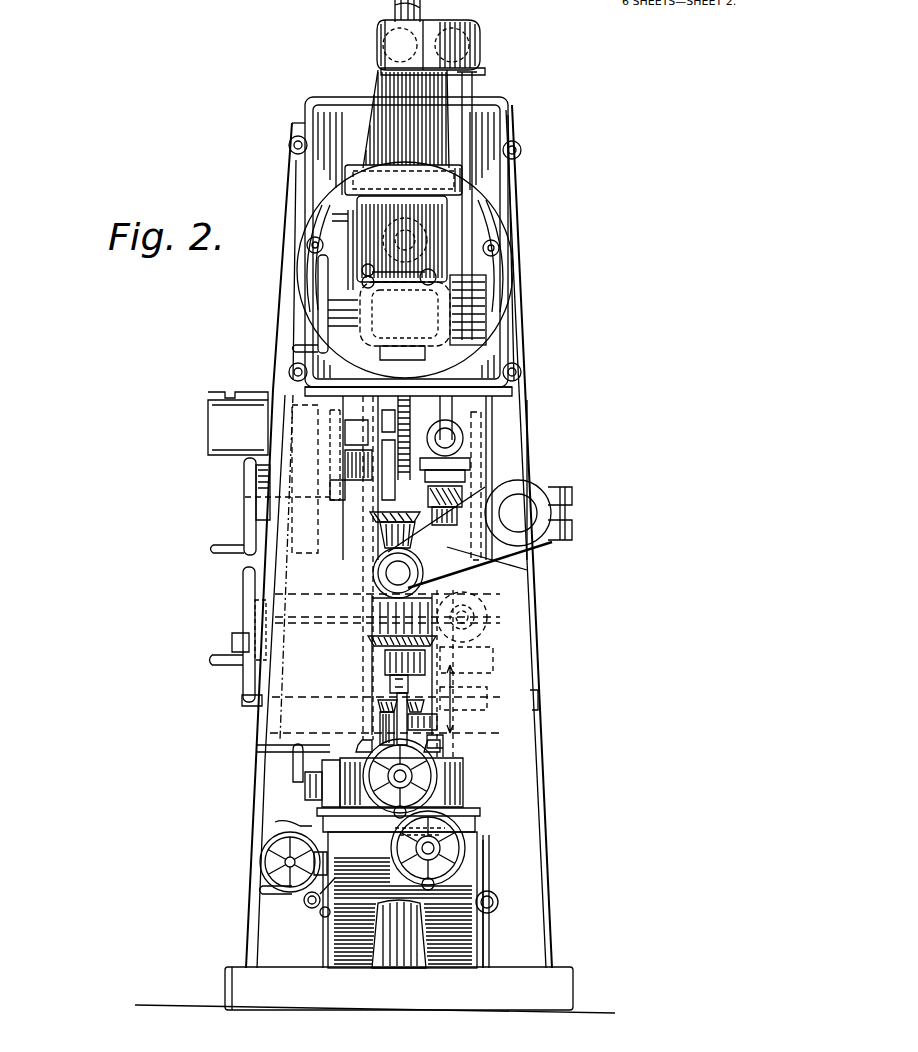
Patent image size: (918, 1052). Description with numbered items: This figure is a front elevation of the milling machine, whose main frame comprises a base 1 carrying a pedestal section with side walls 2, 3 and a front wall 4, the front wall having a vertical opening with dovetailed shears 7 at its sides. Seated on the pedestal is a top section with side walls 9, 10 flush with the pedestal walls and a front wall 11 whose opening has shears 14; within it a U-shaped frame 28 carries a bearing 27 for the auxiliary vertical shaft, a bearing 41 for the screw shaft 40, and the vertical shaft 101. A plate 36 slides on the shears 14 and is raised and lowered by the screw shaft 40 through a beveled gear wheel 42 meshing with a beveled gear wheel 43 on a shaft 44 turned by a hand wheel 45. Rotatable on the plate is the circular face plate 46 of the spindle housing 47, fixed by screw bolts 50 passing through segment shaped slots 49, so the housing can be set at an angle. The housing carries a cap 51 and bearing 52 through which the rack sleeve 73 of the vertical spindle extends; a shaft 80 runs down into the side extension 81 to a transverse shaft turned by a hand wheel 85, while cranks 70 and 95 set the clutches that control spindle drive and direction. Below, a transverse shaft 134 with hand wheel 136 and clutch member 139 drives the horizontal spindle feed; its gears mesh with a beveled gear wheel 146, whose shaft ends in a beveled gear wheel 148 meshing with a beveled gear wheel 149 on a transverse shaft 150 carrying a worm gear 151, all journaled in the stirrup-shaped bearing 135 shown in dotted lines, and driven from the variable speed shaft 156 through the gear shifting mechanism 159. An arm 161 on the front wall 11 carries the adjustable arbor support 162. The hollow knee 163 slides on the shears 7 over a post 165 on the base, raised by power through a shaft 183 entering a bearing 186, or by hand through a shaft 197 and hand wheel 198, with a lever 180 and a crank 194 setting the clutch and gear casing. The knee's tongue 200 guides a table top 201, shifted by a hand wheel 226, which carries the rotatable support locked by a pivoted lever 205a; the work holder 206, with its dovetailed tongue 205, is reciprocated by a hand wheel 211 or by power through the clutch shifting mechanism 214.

The base 1 is at (235, 980).
The side wall 2 is at (253, 760).
The side wall 3 is at (548, 832).
The front wall 4 is at (498, 901).
The shears 7 is at (487, 432).
The side wall 9 is at (305, 186).
The side wall 10 is at (522, 306).
The front wall 11 is at (505, 452).
The shears 14 is at (487, 421).
The bearing 27 is at (362, 560).
The U-shaped frame 28 is at (290, 548).
The plate 36 is at (515, 108).
The screw shaft 40 is at (330, 388).
The bearing 41 is at (316, 565).
The beveled gear wheel 42 is at (340, 523).
The beveled gear wheel 43 is at (370, 520).
The shaft 44 is at (262, 494).
The hand wheel 45 is at (250, 478).
The circular face plate 46 is at (485, 190).
The housing 47 is at (368, 232).
The segment shaped slots 49 is at (492, 224).
The screw bolts 50 is at (500, 247).
The cap 51 is at (305, 140).
The bearing 52 is at (481, 45).
The crank 70 is at (348, 262).
The rack sleeve 73 is at (393, 10).
The shaft 80 is at (470, 92).
The side extension 81 is at (470, 333).
The hand wheel 85 is at (320, 325).
The crank 95 is at (388, 292).
The shaft 101 is at (455, 400).
The transverse shaft 134 is at (490, 632).
The bearing 135 is at (372, 650).
The hand wheel 136 is at (215, 660).
The clutch member 139 is at (440, 614).
The beveled gear wheel 146 is at (455, 645).
The beveled gear wheel 148 is at (384, 700).
The beveled gear wheel 149 is at (385, 738).
The transverse shaft 150 is at (430, 720).
The worm gear 151 is at (446, 748).
The variable speed shaft 156 is at (462, 487).
The gear shifting mechanism 159 is at (225, 425).
The arm 161 is at (530, 508).
The arbor support 162 is at (420, 560).
The hollow table body or knee 163 is at (352, 935).
The post 165 is at (400, 952).
The lever 180 is at (325, 918).
The shaft 183 is at (425, 712).
The bearing 186 is at (388, 680).
The crank 194 is at (245, 692).
The shaft 197 is at (462, 508).
The hand wheel 198 is at (268, 835).
The longitudinal tongue 200 is at (318, 902).
The table top 201 is at (475, 826).
The tongue 205 is at (450, 776).
The pivoted lever 205a is at (276, 824).
The reciprocable work holder 206 is at (345, 742).
The hand wheel 211 is at (445, 762).
The fork, rock shaft and crank 214 is at (296, 768).
The hand wheel 226 is at (465, 850).